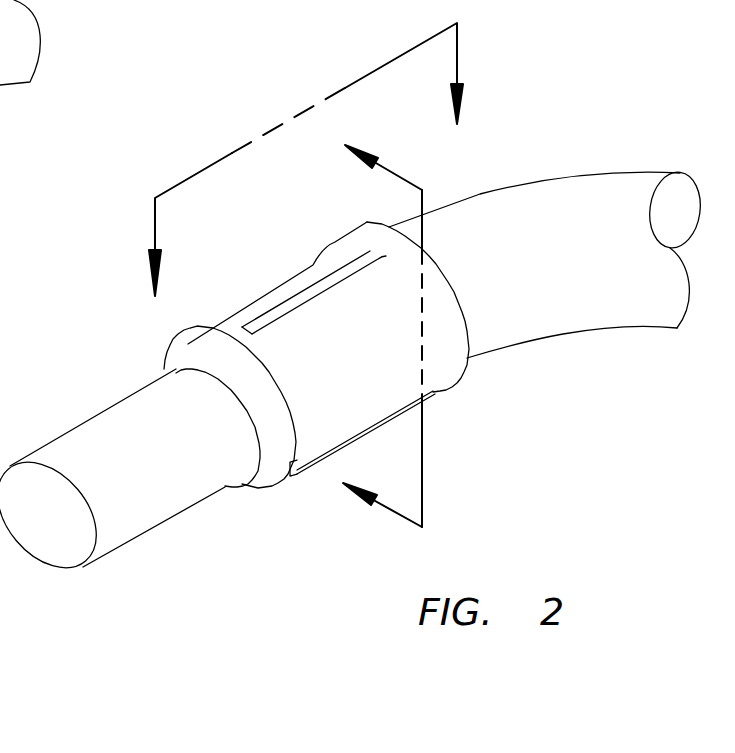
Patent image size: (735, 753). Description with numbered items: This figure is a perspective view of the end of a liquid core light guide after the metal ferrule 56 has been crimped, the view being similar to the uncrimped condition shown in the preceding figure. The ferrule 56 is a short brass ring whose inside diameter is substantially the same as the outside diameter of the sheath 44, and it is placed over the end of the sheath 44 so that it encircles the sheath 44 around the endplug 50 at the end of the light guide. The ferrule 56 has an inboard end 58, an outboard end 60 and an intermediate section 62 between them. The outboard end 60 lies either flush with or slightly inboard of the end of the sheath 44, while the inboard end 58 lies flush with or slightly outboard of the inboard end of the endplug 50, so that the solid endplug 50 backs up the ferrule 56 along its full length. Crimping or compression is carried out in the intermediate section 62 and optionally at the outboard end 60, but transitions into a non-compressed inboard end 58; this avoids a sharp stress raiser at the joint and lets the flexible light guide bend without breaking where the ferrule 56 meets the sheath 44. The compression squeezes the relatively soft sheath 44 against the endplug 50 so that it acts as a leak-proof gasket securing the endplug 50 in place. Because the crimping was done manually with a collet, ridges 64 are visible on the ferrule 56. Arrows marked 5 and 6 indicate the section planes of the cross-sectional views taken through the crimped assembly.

The sheath 44 is at (175, 350).
The endplug 50 is at (123, 543).
The ferrule 56 is at (392, 352).
The inboard end 58 is at (440, 373).
The outboard end 60 is at (285, 480).
The intermediate section 62 is at (231, 314).
The ridges 64 is at (273, 317).
The section line 5- 5 is at (382, 332).
The section line 6- 6 is at (306, 159).